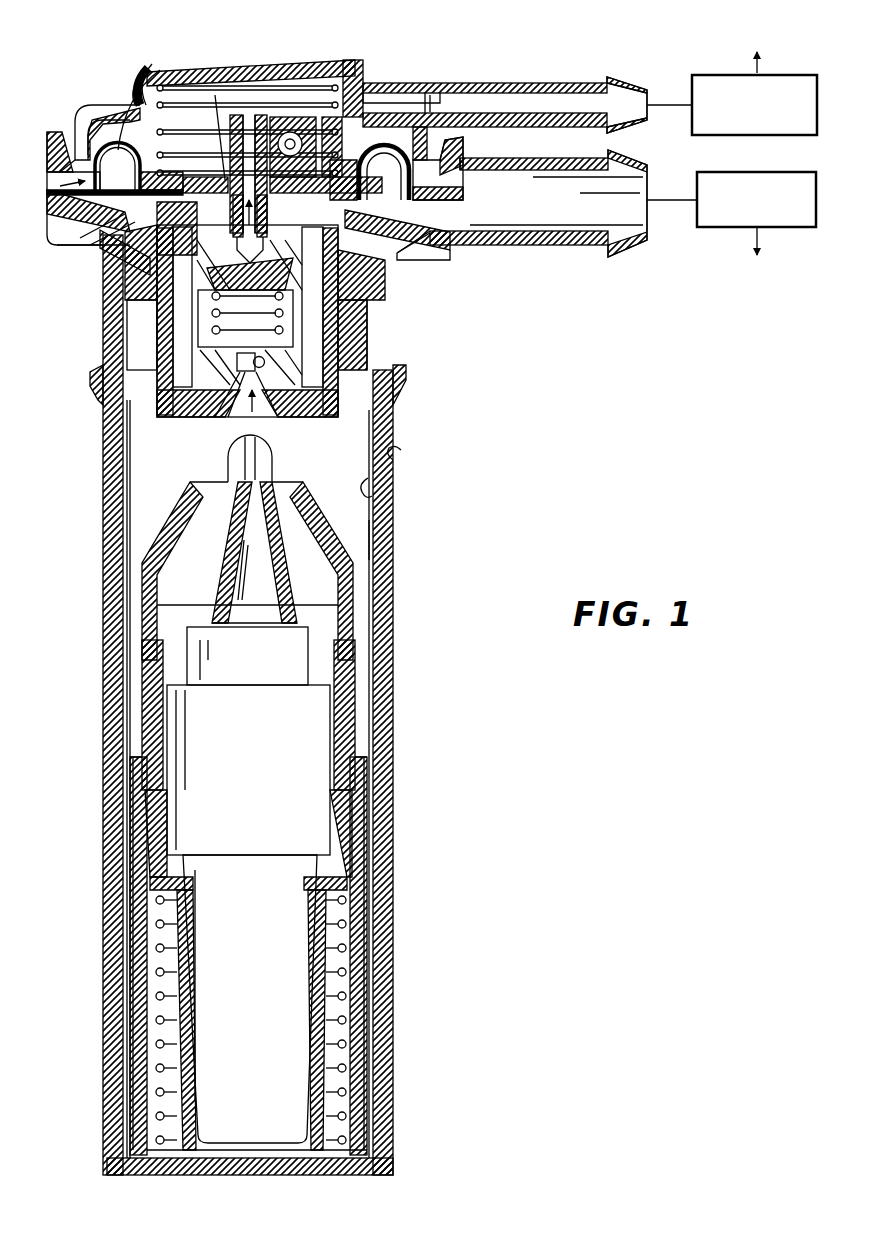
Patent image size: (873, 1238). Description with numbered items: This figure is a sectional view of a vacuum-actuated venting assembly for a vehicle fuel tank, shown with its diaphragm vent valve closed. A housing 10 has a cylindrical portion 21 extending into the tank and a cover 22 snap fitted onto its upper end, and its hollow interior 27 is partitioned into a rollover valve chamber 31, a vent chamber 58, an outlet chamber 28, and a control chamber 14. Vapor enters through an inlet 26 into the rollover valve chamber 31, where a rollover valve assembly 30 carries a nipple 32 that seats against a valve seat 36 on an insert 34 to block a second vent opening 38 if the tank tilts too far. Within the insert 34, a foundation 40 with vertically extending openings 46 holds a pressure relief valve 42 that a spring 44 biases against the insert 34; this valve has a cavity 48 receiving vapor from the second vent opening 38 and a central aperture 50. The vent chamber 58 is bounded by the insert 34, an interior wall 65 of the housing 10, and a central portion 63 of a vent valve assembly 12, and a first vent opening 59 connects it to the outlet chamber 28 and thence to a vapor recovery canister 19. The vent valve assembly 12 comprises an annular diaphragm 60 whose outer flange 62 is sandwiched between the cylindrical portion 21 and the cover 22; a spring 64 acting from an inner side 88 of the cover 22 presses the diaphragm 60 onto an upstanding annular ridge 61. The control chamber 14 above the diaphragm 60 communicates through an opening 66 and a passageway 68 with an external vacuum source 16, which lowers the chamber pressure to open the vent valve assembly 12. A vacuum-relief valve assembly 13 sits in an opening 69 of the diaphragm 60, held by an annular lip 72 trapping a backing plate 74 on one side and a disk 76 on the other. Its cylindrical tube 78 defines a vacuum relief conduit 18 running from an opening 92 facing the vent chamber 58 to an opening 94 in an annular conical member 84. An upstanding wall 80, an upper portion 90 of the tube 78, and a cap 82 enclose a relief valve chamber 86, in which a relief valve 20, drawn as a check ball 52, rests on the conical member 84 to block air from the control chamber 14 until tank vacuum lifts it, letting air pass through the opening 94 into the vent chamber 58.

The housing 10 is at (95, 310).
The vent valve assembly 12 is at (60, 222).
The vacuum-relief valve assembly 13 is at (215, 110).
The control chamber 14 is at (270, 115).
The external vacuum source 16 is at (692, 85).
The vacuum relief conduit 18 is at (235, 120).
The vapor recovery canister 19 is at (697, 180).
The relief valve 20 is at (368, 100).
The cylindrical portion 21 is at (103, 506).
The cover 22 is at (78, 110).
The inlet 26 is at (396, 460).
The hollow interior 27 is at (390, 482).
The outlet chamber 28 is at (648, 222).
The rollover valve assembly 30 is at (135, 700).
The rollover valve chamber 31 is at (385, 540).
The nipple 32 is at (230, 458).
The insert 34 is at (160, 400).
The valve seat 36 is at (235, 405).
The second vent opening 38 is at (210, 410).
The foundation 40 is at (262, 370).
The pressure relief valve 42 is at (293, 310).
The spring 44 is at (342, 305).
The openings 46 is at (140, 325).
The cavity 48 is at (300, 330).
The central aperture 50 is at (150, 345).
The check ball 52 is at (262, 378).
The vent chamber 58 is at (120, 260).
The first vent opening 59 is at (420, 252).
The annular diaphragm 60 is at (108, 140).
The upstanding annular ridge 61 is at (90, 238).
The flange 62 is at (50, 152).
The central portion 63 is at (125, 95).
The spring 64 is at (160, 100).
The interior wall 65 is at (105, 245).
The opening 66 is at (375, 100).
The passageway 68 is at (424, 98).
The opening 69 is at (55, 183).
The annular lip 72 is at (425, 262).
The backing plate 74 is at (365, 212).
The disk 76 is at (150, 105).
The cylindrical tube 78 is at (200, 100).
The upstanding wall 80 is at (440, 95).
The cap 82 is at (305, 88).
The annular conical member 84 is at (384, 172).
The relief valve chamber 86 is at (348, 85).
The inner side 88 is at (312, 110).
The upper portion 90 is at (290, 130).
The opening 92 is at (250, 229).
The opening 94 is at (368, 192).